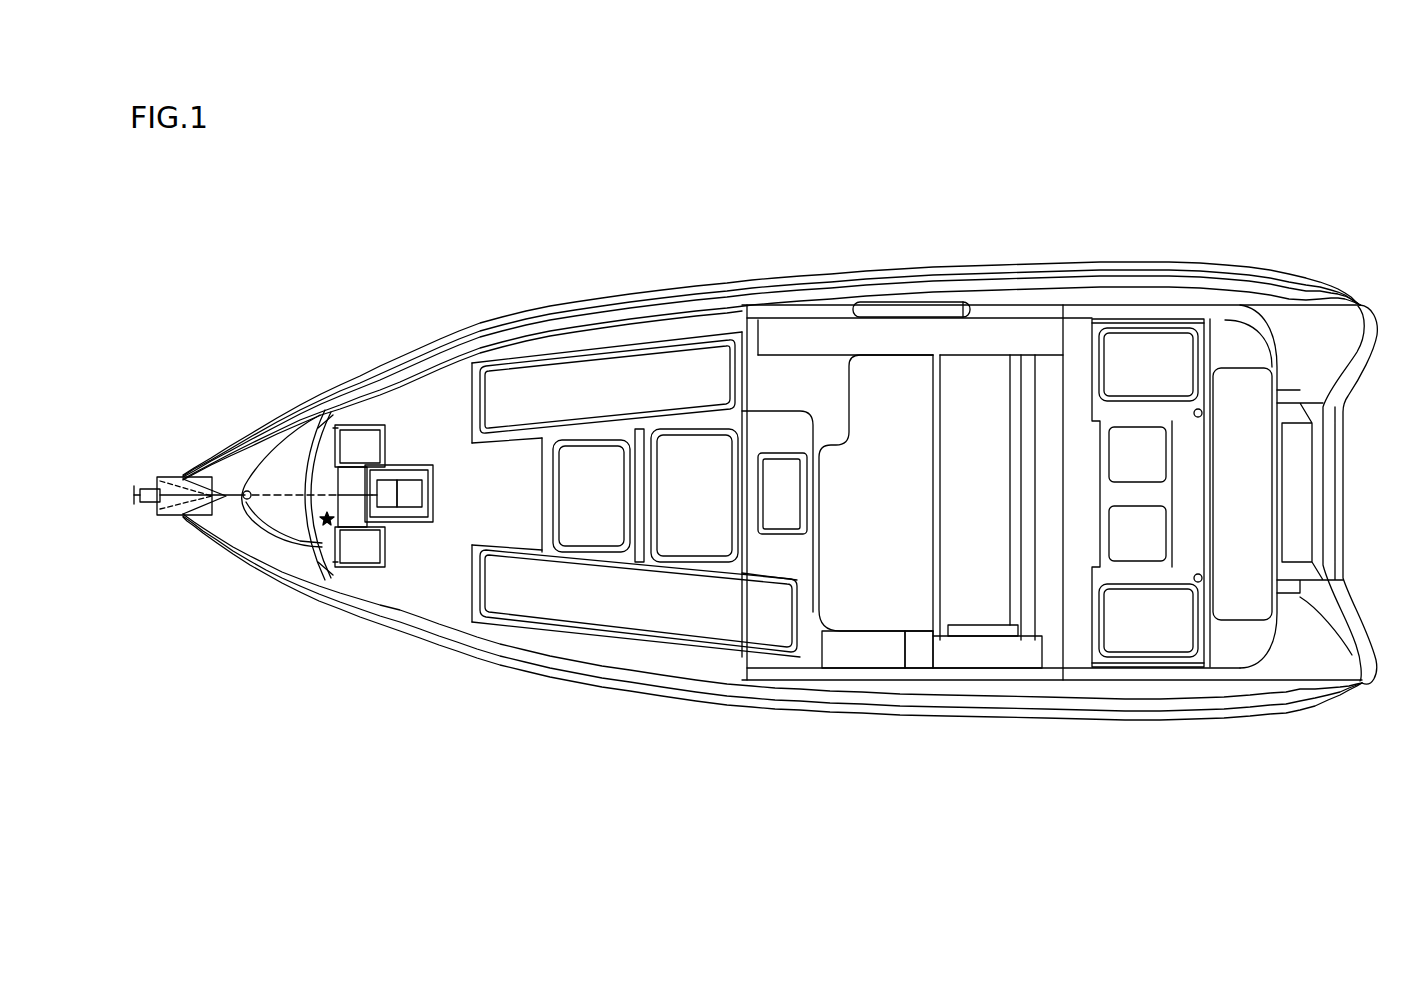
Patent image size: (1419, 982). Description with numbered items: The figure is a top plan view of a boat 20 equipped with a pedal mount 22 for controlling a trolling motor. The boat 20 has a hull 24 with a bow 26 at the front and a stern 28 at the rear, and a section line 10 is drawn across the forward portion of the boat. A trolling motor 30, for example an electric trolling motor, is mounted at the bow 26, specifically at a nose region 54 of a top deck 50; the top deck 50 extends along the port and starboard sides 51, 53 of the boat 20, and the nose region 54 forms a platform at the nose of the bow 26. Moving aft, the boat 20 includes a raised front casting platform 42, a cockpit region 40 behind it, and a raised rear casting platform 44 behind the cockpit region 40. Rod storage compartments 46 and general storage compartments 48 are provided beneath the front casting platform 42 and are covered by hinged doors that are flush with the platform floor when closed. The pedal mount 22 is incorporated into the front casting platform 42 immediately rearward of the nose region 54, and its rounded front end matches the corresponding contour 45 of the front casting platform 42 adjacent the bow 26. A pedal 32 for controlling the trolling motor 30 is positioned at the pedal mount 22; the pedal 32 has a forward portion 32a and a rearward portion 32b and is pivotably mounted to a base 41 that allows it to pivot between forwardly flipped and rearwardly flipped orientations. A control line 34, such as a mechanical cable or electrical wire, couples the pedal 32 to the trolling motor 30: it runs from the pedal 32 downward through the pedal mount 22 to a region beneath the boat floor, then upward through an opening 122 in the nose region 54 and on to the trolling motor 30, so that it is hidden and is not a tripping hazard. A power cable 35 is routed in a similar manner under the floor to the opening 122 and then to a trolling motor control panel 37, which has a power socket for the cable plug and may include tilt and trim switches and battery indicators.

The section line 10 is at (362, 440).
The boat 20 is at (780, 212).
The pedal mount 22 is at (388, 418).
The hull 24 is at (727, 704).
The bow 26 is at (203, 535).
The stern 28 is at (1363, 304).
The trolling motor 30 is at (163, 475).
The pedal 32 is at (412, 509).
The forward portion 32a is at (386, 484).
The rearward portion 32b is at (408, 484).
The control line 34 is at (228, 490).
The power cable 35 is at (265, 538).
The trolling motor control panel 37 is at (320, 553).
The cockpit region 40 is at (871, 501).
The base 41 is at (422, 497).
The raised front casting platform 42 is at (473, 489).
The raised rear casting platform 44 is at (1132, 424).
The contour 45 is at (307, 462).
The rod storage compartments 46 is at (610, 370).
The general storage compartments 48 is at (572, 501).
The top deck 50 is at (866, 298).
The port side 51 is at (1045, 718).
The starboard side 53 is at (1033, 273).
The nose region 54 is at (228, 521).
The opening 122 is at (249, 491).